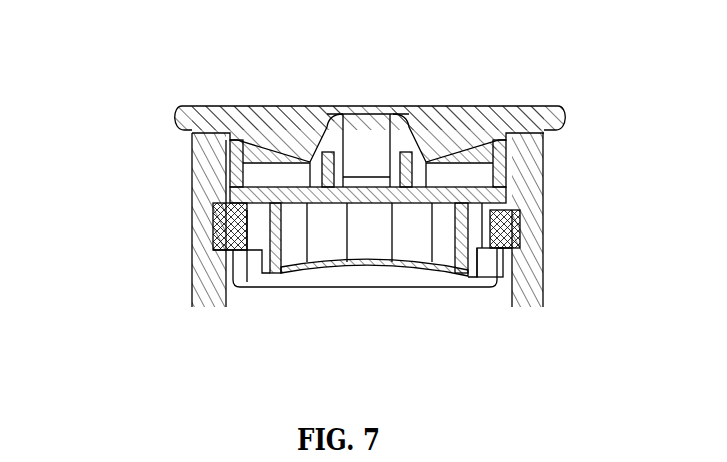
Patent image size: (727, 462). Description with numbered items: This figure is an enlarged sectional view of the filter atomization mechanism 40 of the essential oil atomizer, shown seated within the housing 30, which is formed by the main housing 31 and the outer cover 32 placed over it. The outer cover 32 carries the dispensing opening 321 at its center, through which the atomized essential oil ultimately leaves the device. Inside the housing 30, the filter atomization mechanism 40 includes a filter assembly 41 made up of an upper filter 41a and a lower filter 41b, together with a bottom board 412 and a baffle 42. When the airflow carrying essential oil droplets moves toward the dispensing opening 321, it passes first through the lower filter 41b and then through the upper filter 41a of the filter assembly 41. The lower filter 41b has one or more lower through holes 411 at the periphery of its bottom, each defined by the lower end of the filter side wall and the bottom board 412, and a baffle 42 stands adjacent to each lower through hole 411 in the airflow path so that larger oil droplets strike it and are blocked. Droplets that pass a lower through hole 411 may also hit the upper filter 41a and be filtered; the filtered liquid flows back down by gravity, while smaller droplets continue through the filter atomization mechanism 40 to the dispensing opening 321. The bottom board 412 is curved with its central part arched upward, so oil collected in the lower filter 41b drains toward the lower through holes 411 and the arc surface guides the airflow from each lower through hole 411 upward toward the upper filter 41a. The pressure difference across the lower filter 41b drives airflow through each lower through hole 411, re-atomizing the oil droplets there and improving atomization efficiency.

The housing 30 is at (272, 216).
The main housing 31 is at (205, 254).
The outer cover 32 is at (210, 182).
The dispensing opening 321 is at (367, 145).
The filter atomization mechanism 40 is at (339, 201).
The cap 41 is at (370, 160).
The upper filter 41a is at (443, 135).
The lower filter 41b is at (497, 150).
The lower through hole 411 is at (477, 271).
The bottom board 412 is at (347, 268).
The baffle 42 is at (280, 222).